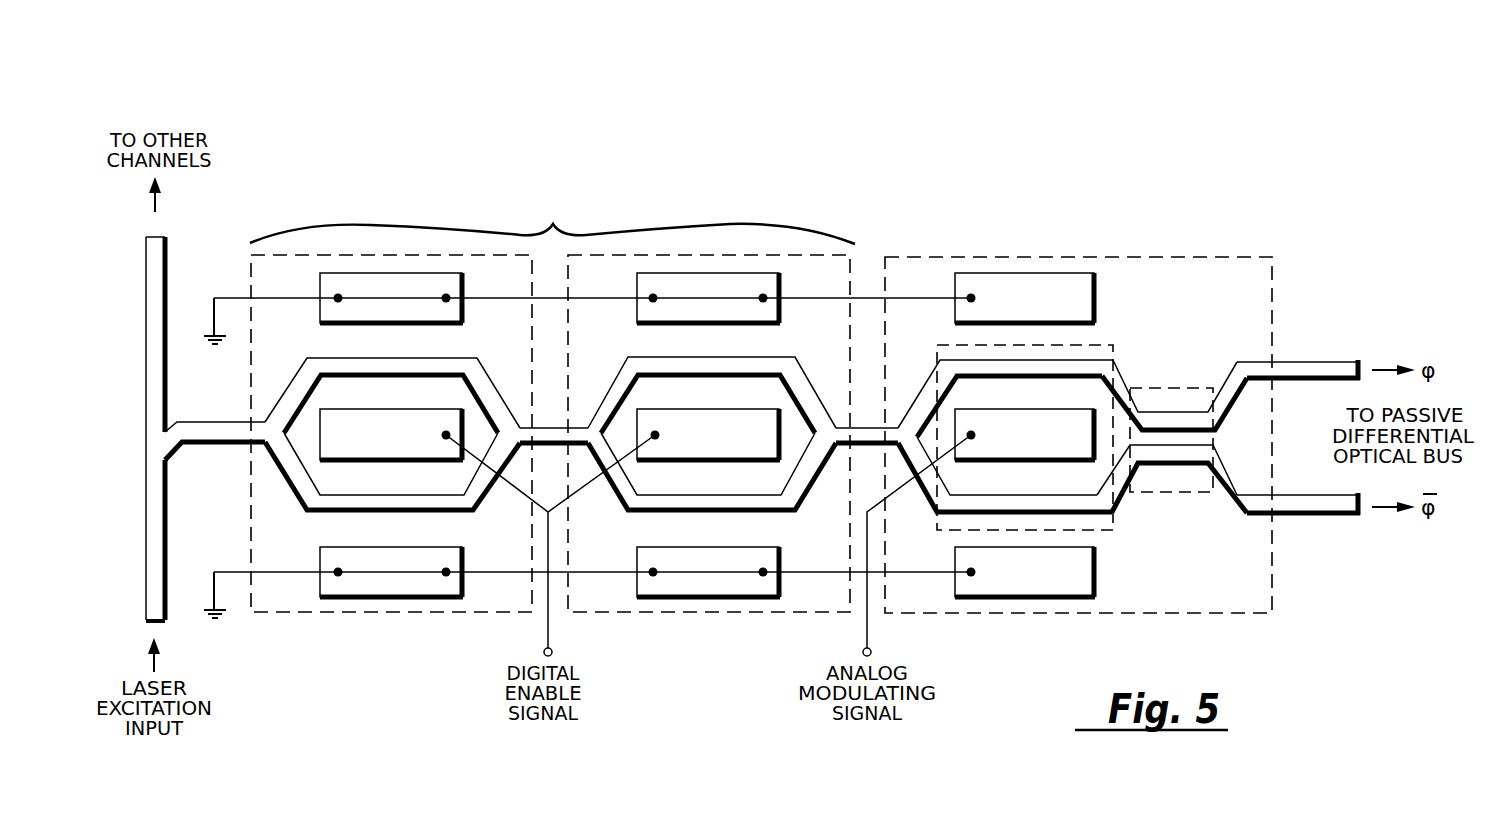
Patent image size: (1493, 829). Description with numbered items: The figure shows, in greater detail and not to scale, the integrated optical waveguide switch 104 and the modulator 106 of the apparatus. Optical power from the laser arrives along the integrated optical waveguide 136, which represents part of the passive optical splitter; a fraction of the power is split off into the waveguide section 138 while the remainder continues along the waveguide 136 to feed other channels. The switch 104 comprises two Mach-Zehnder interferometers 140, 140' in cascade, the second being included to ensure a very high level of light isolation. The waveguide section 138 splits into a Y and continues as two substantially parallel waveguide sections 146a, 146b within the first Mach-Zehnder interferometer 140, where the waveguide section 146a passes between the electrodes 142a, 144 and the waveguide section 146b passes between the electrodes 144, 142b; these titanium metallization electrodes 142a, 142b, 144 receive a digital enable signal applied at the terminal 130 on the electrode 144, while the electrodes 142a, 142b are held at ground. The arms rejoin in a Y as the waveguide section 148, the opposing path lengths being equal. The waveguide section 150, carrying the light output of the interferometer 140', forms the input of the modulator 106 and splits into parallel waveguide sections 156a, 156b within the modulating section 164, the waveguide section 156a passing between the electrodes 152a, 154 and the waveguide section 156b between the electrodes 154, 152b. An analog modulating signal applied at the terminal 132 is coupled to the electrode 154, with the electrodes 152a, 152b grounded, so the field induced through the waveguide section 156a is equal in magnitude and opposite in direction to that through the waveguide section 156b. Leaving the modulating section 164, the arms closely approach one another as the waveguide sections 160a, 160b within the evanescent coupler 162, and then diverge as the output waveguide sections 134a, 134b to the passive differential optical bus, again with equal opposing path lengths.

The integrated optical waveguide switch 104 is at (552, 221).
The modulator 106 is at (1013, 257).
The terminal 130 is at (553, 655).
The terminal 132 is at (872, 655).
The waveguide section 134a is at (1318, 364).
The waveguide section 134b is at (1310, 507).
The integrated optical waveguide 136 is at (151, 339).
The waveguide section 138 is at (217, 425).
The first Mach-Zehnder interferometer 140 is at (391, 452).
The second Mach-Zehnder interferometer 140' is at (709, 452).
The electrode 142a is at (463, 289).
The electrode 142b is at (350, 547).
The electrode 144 is at (372, 408).
The waveguide section 146a is at (353, 363).
The waveguide section 146b is at (462, 503).
The waveguide section 148 is at (550, 432).
The waveguide section 150 is at (870, 432).
The electrode 152a is at (1096, 297).
The electrode 152b is at (1096, 582).
The electrode 154 is at (1032, 464).
The waveguide section 156a is at (985, 374).
The waveguide section 156b is at (963, 500).
The waveguide section 160a is at (1177, 416).
The waveguide section 160b is at (1191, 456).
The evanescent coupler 162 is at (1148, 493).
The modulating section 164 is at (1115, 345).